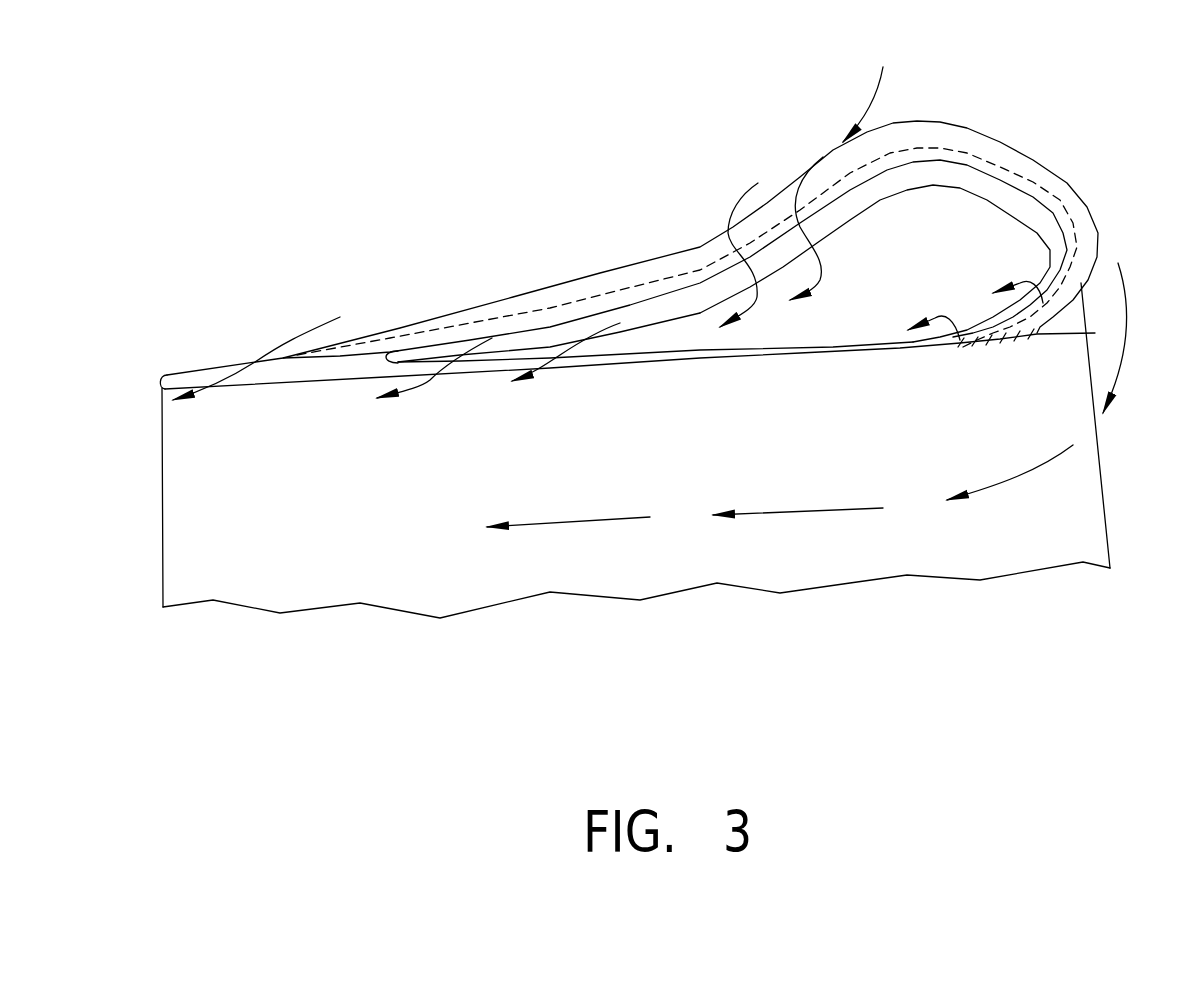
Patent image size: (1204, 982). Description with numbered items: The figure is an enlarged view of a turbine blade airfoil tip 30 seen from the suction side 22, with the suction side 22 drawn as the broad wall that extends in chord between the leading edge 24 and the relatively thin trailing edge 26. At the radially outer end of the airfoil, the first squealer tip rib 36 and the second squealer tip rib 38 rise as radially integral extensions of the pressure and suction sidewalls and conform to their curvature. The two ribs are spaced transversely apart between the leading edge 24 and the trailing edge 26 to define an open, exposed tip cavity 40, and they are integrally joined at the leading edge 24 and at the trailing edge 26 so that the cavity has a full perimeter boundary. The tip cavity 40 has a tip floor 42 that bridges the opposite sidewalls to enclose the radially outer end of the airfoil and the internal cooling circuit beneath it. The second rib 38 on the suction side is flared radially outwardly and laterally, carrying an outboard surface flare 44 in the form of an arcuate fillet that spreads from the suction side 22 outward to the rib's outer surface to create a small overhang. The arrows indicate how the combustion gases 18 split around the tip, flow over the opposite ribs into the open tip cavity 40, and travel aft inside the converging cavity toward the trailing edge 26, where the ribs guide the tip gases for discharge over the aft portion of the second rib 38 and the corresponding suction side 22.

The combustion gases 18 is at (1132, 318).
The suction side 22 is at (487, 467).
The leading edge 24 is at (940, 150).
The trailing edge 26 is at (163, 403).
The airfoil tip 30 is at (512, 298).
The first squealer tip rib 36 is at (647, 300).
The second squealer tip rib 38 is at (757, 358).
The tip cavity 40 is at (783, 348).
The tip floor 42 is at (978, 254).
The surface flare 44 is at (1013, 333).